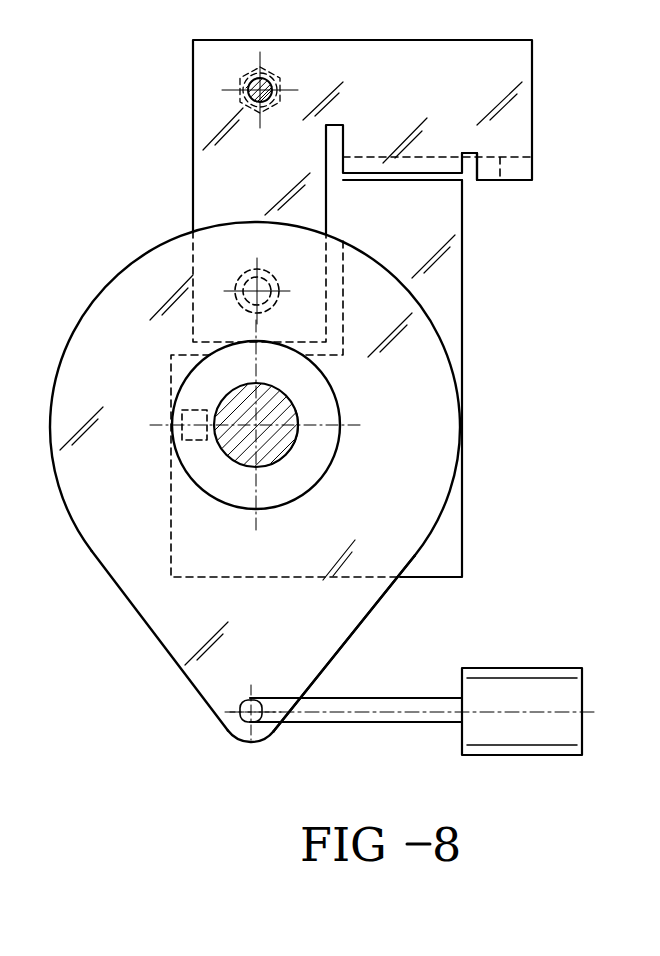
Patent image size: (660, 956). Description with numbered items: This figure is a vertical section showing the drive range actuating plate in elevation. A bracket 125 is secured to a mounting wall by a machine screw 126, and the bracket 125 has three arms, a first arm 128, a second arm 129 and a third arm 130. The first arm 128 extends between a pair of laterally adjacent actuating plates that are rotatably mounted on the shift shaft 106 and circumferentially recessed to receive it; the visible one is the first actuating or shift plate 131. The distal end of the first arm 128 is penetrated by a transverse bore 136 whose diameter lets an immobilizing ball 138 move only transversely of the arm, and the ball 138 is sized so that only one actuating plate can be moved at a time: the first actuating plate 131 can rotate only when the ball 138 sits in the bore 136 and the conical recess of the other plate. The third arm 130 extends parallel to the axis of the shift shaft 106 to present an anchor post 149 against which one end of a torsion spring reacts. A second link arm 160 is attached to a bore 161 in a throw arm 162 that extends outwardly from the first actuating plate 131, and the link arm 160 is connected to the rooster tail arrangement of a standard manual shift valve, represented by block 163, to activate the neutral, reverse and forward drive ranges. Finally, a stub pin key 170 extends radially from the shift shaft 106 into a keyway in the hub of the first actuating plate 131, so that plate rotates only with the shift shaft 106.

The shift shaft 106 is at (280, 406).
The bracket 125 is at (222, 127).
The machine screw 126 is at (240, 80).
The first arm 128 is at (218, 178).
The second arm 129 is at (443, 547).
The third arm 130 is at (482, 182).
The first actuating plate 131 is at (425, 415).
The transverse bore 136 is at (240, 309).
The immobilizing ball 138 is at (240, 270).
The anchor post 149 is at (534, 166).
The second link arm 160 is at (430, 706).
The bore 161 is at (222, 722).
The throw arm 162 is at (295, 673).
The manual shift valve 163 is at (525, 688).
The stub pin key 170 is at (205, 411).